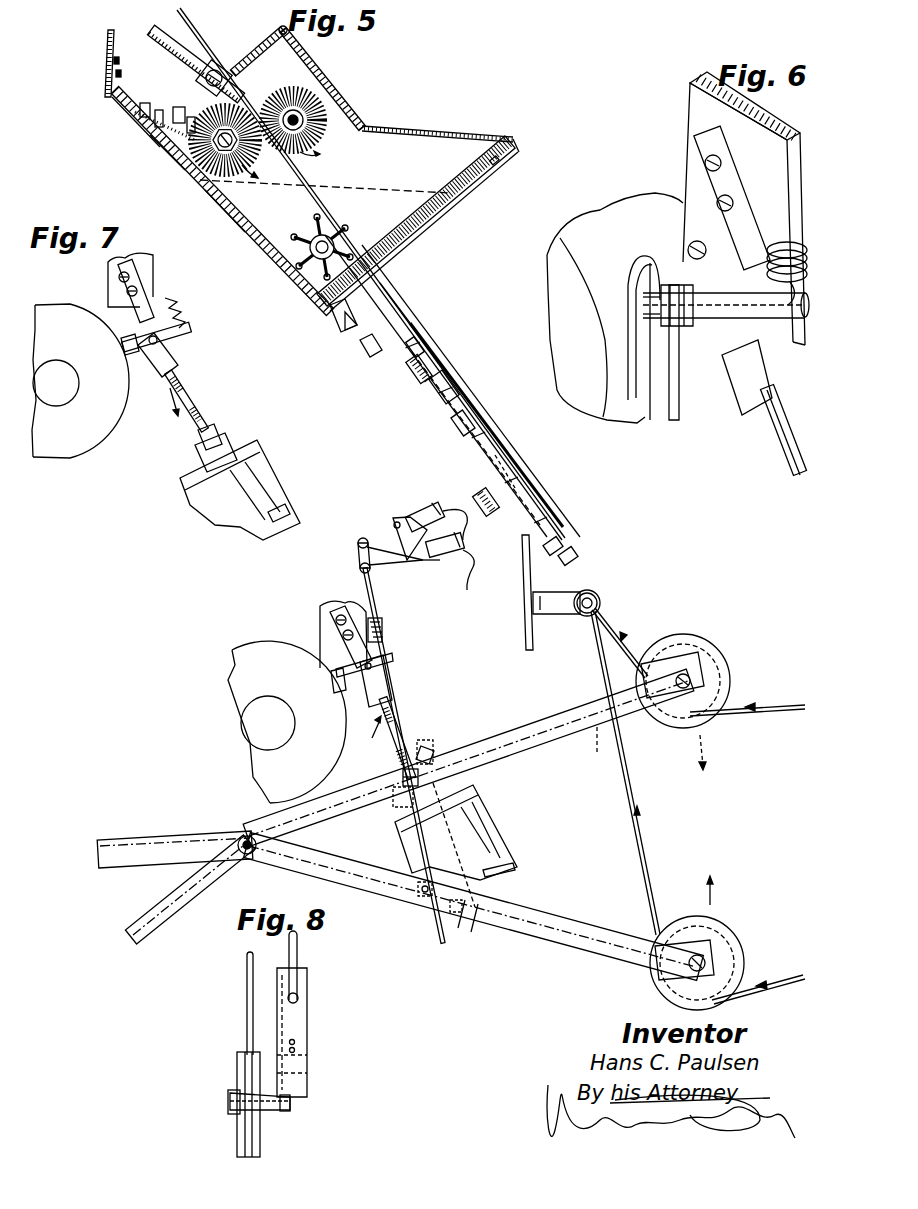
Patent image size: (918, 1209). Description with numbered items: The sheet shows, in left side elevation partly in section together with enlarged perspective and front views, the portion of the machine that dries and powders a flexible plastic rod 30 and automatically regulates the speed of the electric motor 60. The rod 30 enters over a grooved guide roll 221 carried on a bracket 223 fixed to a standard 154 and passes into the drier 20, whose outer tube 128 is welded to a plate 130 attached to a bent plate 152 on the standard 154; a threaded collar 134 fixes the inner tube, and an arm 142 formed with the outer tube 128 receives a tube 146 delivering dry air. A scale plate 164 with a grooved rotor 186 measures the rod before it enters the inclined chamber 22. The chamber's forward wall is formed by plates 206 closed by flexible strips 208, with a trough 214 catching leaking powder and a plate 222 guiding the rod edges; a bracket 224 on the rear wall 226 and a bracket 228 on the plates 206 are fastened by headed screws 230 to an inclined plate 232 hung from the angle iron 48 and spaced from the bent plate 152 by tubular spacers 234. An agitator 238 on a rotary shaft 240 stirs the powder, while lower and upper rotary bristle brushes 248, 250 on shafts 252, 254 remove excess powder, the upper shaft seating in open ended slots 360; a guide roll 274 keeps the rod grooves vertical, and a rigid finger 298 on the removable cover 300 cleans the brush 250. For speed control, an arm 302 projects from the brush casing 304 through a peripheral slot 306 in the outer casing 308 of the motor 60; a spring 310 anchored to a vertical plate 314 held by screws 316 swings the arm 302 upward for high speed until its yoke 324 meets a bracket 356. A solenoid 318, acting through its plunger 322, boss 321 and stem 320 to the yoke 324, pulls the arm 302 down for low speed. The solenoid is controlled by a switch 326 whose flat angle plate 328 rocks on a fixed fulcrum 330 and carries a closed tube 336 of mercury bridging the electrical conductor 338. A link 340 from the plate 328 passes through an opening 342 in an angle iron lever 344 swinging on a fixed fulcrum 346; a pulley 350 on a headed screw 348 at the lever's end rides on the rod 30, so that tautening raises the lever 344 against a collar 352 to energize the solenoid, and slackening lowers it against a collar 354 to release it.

In FIG. 5, the drier 20 is at (528, 468).
In FIG. 5, the chamber 22 is at (467, 127).
In FIG. 5, the rod 30 is at (400, 350).
In FIG. 8, the rod 30 is at (247, 988).
In FIG. 5, the angle iron 48 is at (106, 66).
In FIG. 5, the electric motor 60 is at (243, 687).
In FIG. 7, the electric motor 60 is at (60, 452).
In FIG. 5, the outer tube 128 is at (503, 473).
In FIG. 5, the plate 130 is at (457, 428).
In FIG. 5, the collar 134 is at (573, 543).
In FIG. 5, the arm 142 is at (470, 424).
In FIG. 5, the tube 146 is at (442, 396).
In FIG. 5, the bent plate 152 is at (518, 500).
In FIG. 5, the standard 154 is at (530, 620).
In FIG. 5, the plate 164 is at (420, 348).
In FIG. 5, the rotor 186 is at (432, 359).
In FIG. 5, the plates 206 is at (480, 179).
In FIG. 5, the flat strips 208 is at (430, 197).
In FIG. 5, the trough 214 is at (383, 330).
In FIG. 5, the guide roll 221 is at (598, 603).
In FIG. 5, the plate 222 is at (377, 277).
In FIG. 5, the bracket 223 is at (587, 593).
In FIG. 5, the bracket 224 is at (153, 127).
In FIG. 5, the rear wall 226 is at (175, 152).
In FIG. 5, the bracket 228 is at (345, 332).
In FIG. 5, the headed screws 230 is at (143, 110).
In FIG. 5, the inclined plate 232 is at (283, 268).
In FIG. 5, the tubular spacers 234 is at (477, 501).
In FIG. 5, the agitator 238 is at (330, 219).
In FIG. 5, the rotary shaft 240 is at (311, 238).
In FIG. 5, the rotary bristle brush 248 is at (200, 164).
In FIG. 5, the rotary bristle brush 250 is at (335, 126).
In FIG. 5, the shaft 252 is at (230, 208).
In FIG. 5, the shaft 254 is at (292, 72).
In FIG. 5, the guide roll 274 is at (216, 70).
In FIG. 5, the rigid finger 298 is at (322, 78).
In FIG. 5, the cover 300 is at (427, 123).
In FIG. 5, the arm 302 is at (388, 646).
In FIG. 6, the arm 302 is at (797, 322).
In FIG. 7, the arm 302 is at (176, 341).
In FIG. 6, the brush casing 304 is at (657, 400).
In FIG. 6, the peripheral slot 306 is at (676, 405).
In FIG. 6, the outer casing 308 is at (620, 405).
In FIG. 5, the spring 310 is at (381, 624).
In FIG. 6, the spring 310 is at (785, 245).
In FIG. 7, the spring 310 is at (178, 306).
In FIG. 5, the vertical plate 314 is at (327, 610).
In FIG. 6, the vertical plate 314 is at (695, 112).
In FIG. 7, the vertical plate 314 is at (150, 262).
In FIG. 6, the screws 316 is at (690, 245).
In FIG. 5, the solenoid 318 is at (483, 830).
In FIG. 7, the solenoid 318 is at (222, 533).
In FIG. 5, the stem 320 is at (403, 717).
In FIG. 6, the stem 320 is at (780, 470).
In FIG. 7, the stem 320 is at (180, 399).
In FIG. 5, the boss 321 is at (432, 752).
In FIG. 5, the plunger 322 is at (470, 787).
In FIG. 7, the plunger 322 is at (197, 463).
In FIG. 5, the yoke 324 is at (376, 708).
In FIG. 6, the yoke 324 is at (747, 395).
In FIG. 7, the yoke 324 is at (172, 360).
In FIG. 5, the switch 326 is at (358, 540).
In FIG. 5, the flat angle plate 328 is at (434, 544).
In FIG. 5, the fixed fulcrum 330 is at (397, 568).
In FIG. 5, the closed tube 336 is at (397, 530).
In FIG. 5, the electrical conductor 338 is at (476, 550).
In FIG. 5, the link 340 is at (403, 773).
In FIG. 8, the link 340 is at (297, 952).
In FIG. 5, the opening 342 is at (422, 892).
In FIG. 8, the opening 342 is at (298, 998).
In FIG. 5, the lever 344 is at (493, 938).
In FIG. 8, the lever 344 is at (297, 1021).
In FIG. 5, the fixed fulcrum 346 is at (243, 838).
In FIG. 5, the headed screw 348 is at (703, 963).
In FIG. 8, the headed screw 348 is at (230, 1105).
In FIG. 5, the pulley 350 is at (703, 640).
In FIG. 8, the pulley 350 is at (240, 1130).
In FIG. 5, the collar 352 is at (424, 740).
In FIG. 5, the collar 354 is at (458, 912).
In FIG. 5, the bracket 356 is at (330, 640).
In FIG. 6, the bracket 356 is at (705, 152).
In FIG. 7, the bracket 356 is at (122, 284).
In FIG. 5, the open ended slots 360 is at (334, 50).